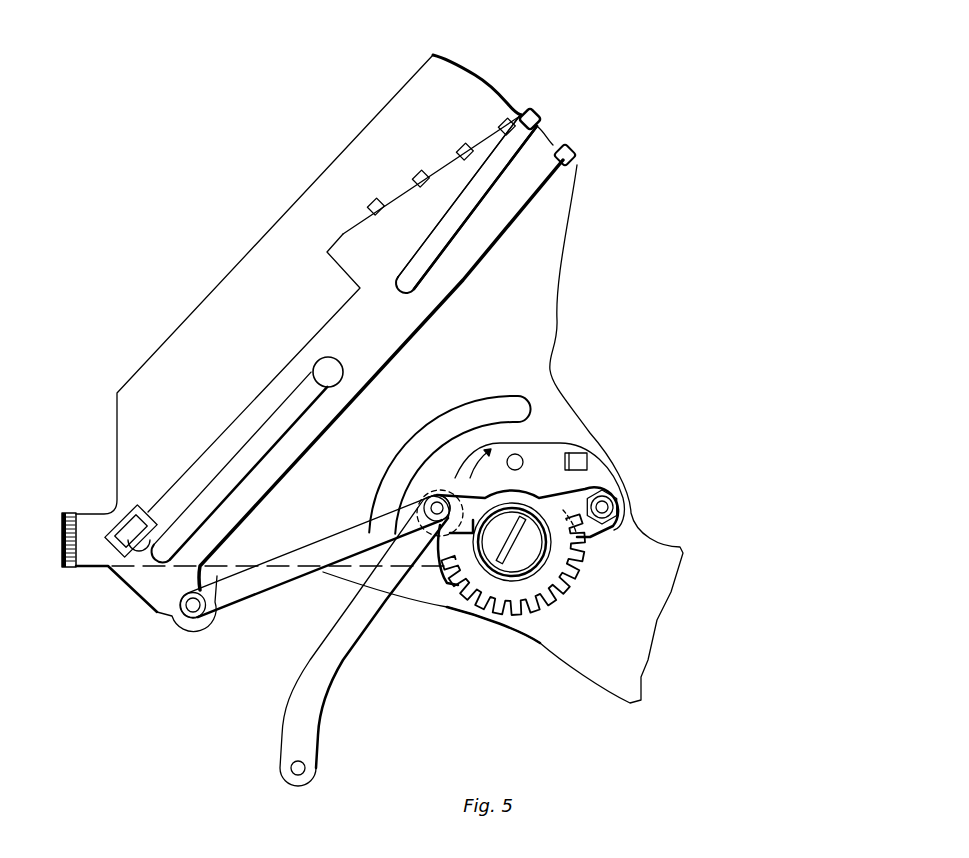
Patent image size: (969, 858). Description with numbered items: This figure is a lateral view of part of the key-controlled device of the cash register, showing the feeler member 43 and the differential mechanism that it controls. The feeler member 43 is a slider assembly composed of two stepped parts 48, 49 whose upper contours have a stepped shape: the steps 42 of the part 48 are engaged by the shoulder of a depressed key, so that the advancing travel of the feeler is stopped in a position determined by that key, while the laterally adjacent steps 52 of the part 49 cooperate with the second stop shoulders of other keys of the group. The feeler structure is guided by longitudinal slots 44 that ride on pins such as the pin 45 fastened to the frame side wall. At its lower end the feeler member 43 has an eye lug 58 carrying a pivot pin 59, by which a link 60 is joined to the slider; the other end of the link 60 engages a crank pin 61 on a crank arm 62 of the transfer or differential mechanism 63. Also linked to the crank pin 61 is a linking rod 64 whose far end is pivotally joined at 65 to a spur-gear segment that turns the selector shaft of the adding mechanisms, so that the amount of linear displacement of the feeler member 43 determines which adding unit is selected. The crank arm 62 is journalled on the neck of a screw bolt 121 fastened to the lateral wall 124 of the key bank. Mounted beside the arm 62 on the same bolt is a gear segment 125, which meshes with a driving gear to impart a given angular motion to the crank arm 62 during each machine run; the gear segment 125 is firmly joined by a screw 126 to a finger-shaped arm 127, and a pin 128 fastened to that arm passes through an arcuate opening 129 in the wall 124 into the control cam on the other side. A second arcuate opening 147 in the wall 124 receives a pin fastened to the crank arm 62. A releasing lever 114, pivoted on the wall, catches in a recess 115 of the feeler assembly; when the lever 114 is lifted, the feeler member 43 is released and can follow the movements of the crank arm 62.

The step 42 is at (358, 233).
The steps 52 is at (380, 208).
The feeler member 43 is at (345, 320).
The longitudinal slots 44 is at (238, 452).
The pin 45 is at (328, 372).
The stepped part 48 is at (463, 267).
The stepped part 49 is at (467, 221).
The lateral wall 124 is at (543, 323).
The pin 128 is at (520, 455).
The finger-shaped arm 127 is at (560, 446).
The screw 126 is at (606, 503).
The arcuate opening 147 is at (388, 488).
The releasing lever 114 is at (105, 538).
The recess 115 is at (122, 558).
The eye lug 58 is at (192, 628).
The pivot pin 59 is at (205, 617).
The link 60 is at (256, 597).
The linking rod 64 is at (340, 640).
The pivot joint 65 is at (305, 770).
The crank pin 61 is at (420, 560).
The crank arm 62 is at (442, 560).
The arcuate opening 129 is at (447, 580).
The screw bolt 121 is at (512, 567).
The transfer (differential) mechanism 63 is at (540, 580).
The gear segment 125 is at (565, 600).